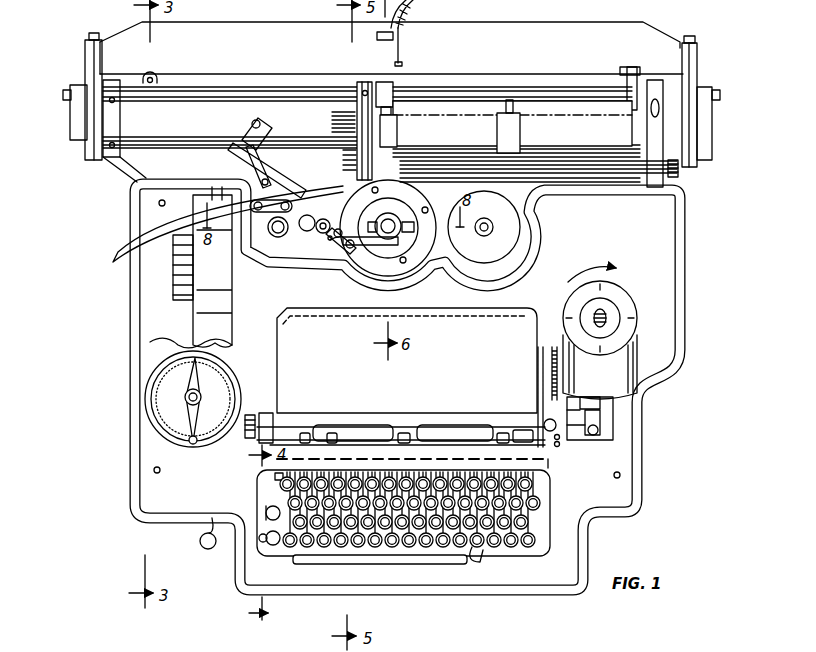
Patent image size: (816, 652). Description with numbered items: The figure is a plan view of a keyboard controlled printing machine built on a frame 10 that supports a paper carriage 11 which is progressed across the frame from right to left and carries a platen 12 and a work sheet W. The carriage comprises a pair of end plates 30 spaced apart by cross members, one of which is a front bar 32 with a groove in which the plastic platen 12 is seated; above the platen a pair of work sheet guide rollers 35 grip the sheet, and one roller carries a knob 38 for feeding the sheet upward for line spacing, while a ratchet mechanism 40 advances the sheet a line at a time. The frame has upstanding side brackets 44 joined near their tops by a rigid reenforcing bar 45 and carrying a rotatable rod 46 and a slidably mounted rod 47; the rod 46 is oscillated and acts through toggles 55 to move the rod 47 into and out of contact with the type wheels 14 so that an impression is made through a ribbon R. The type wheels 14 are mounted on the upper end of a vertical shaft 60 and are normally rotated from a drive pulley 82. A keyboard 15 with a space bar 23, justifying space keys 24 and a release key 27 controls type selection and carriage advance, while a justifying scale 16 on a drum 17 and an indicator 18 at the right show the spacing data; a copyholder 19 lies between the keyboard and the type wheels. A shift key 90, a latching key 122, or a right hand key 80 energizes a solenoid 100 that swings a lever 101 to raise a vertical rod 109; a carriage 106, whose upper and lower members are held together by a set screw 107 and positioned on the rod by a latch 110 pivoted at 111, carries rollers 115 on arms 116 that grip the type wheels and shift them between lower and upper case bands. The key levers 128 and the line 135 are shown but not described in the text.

The frame 10 is at (137, 322).
The paper carriage 11 is at (536, 120).
The platen 12 is at (566, 180).
The type wheels 14 is at (407, 276).
The keyboard 15 is at (258, 486).
The justifying scale 16 is at (633, 345).
The drum 17 is at (633, 303).
The indicator 18 is at (617, 406).
The copyholder 19 is at (407, 360).
The space bar 23 is at (375, 565).
The justifying space keys 24 is at (541, 501).
The release key 27 is at (200, 543).
The end plates 30 is at (367, 65).
The frame member or bar 32 is at (596, 88).
The work sheet guide rollers 35 is at (594, 150).
The knob 38 is at (680, 170).
The ratchet mechanism 40 is at (343, 165).
The side brackets 44 is at (88, 60).
The reenforcing bar 45 is at (477, 48).
The rod 46 is at (251, 88).
The rod 47 is at (203, 146).
The toggles 55 is at (113, 128).
The shaft 60 is at (397, 207).
The key 80 is at (479, 561).
The drive pulley 82 is at (208, 178).
The shift key 90 is at (266, 545).
The solenoid 100 is at (267, 130).
The lever 101 is at (278, 177).
The carriage 106 is at (368, 248).
The set screw 107 is at (274, 256).
The rod 109 is at (322, 234).
The latch 110 is at (343, 248).
The pivot 111 is at (329, 240).
The rollers 115 is at (371, 222).
The arms 116 is at (437, 229).
The key 122 is at (266, 511).
The key levers 128 is at (325, 548).
The section line 135 is at (389, 450).
The ribbon R is at (126, 262).
The work sheet W is at (441, 118).